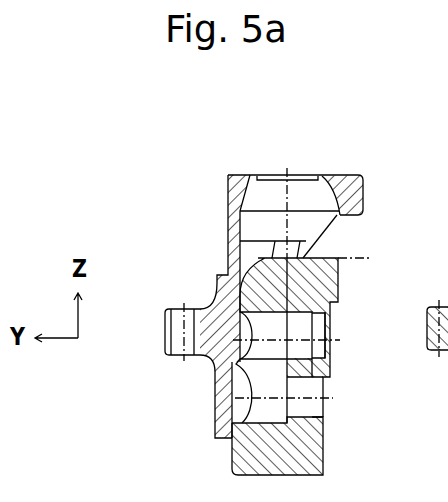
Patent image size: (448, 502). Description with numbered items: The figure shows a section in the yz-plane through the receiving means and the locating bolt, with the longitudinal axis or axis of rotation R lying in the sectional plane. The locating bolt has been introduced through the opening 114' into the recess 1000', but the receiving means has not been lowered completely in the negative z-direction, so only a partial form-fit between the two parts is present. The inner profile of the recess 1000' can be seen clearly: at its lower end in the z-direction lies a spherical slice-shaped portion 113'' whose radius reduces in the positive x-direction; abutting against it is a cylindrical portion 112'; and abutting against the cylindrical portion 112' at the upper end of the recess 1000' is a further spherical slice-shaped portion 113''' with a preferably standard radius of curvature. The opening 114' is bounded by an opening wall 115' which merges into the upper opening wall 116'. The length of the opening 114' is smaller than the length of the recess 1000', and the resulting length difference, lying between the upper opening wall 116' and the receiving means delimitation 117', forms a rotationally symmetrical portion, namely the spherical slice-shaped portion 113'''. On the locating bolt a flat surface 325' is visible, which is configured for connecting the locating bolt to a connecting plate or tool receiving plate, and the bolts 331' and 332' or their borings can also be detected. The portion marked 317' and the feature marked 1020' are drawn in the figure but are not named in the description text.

The sealing surface strip 1020' is at (261, 137).
The recess 1000' is at (304, 267).
The longitudinal axis or axis of rotation R is at (297, 193).
The receiving means delimitation 117' is at (373, 178).
The upper opening wall 116' is at (367, 225).
The opening wall 115' is at (383, 242).
The opening 114' is at (336, 340).
The bolt 331' is at (359, 334).
The bolt 332' is at (359, 392).
The flat surface 325' is at (316, 446).
The spherical slice-shaped portion 113''' is at (240, 306).
The cylindrical portion 112' is at (182, 343).
The spherical slice-shaped portion 113'' is at (171, 400).
The plunger head 317' is at (289, 226).